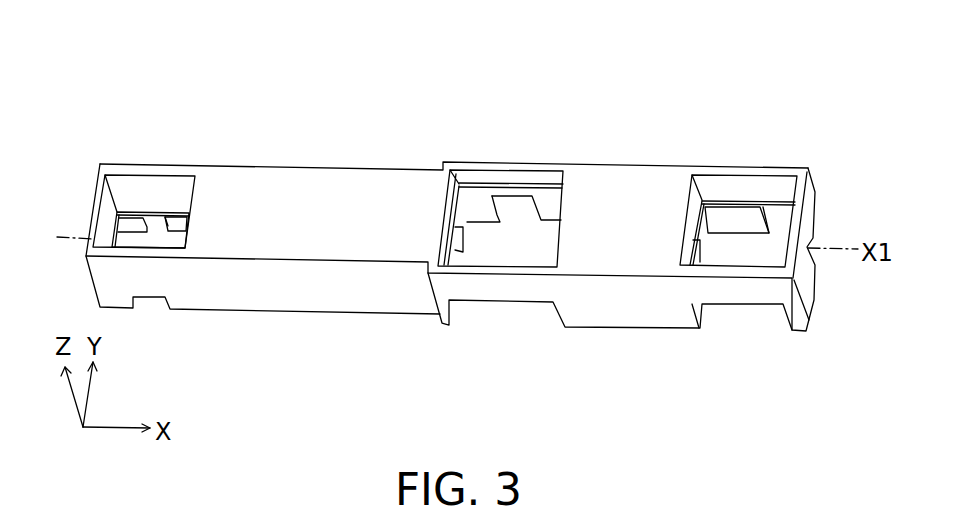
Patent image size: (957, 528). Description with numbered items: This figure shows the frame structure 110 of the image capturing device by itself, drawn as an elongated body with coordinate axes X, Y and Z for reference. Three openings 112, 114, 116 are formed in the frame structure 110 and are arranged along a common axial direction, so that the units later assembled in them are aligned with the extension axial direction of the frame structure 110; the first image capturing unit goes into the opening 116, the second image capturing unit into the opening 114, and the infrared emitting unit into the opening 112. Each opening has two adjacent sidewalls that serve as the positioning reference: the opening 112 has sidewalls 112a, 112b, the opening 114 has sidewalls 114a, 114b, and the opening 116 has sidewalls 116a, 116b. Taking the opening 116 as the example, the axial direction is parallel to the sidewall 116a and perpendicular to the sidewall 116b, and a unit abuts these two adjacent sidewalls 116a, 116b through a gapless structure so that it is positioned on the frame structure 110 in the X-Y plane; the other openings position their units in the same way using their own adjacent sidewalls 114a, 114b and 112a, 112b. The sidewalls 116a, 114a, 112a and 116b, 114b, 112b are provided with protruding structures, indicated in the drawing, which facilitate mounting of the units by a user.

The frame structure 110 is at (870, 108).
The opening 112 is at (140, 185).
The sidewall 112a is at (163, 226).
The sidewall 112b is at (127, 229).
The opening 114 is at (511, 238).
The sidewall 114a is at (481, 199).
The sidewall 114b is at (465, 216).
The opening 116 is at (732, 218).
The sidewall 116a is at (723, 217).
The sidewall 116b is at (704, 244).